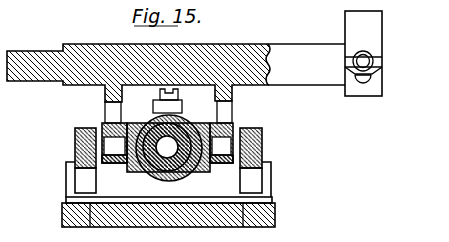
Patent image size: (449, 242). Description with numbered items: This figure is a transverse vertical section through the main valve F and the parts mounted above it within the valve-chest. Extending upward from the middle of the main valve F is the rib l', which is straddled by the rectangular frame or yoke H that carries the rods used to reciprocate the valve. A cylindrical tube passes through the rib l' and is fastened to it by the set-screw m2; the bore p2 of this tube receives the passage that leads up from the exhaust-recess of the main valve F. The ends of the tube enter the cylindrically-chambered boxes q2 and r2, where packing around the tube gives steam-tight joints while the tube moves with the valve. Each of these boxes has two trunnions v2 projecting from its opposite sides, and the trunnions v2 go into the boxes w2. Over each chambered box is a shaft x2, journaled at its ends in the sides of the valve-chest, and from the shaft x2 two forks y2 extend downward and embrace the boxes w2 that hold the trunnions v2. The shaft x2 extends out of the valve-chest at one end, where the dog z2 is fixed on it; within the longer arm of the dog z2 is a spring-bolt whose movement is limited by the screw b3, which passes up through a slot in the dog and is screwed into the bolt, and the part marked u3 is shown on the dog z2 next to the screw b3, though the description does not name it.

The shaft x2 is at (176, 73).
The dog z2 is at (363, 53).
The bolt u3 is at (383, 61).
The screw b3 is at (364, 89).
The set-screw m2 is at (176, 100).
The forks y2 is at (176, 108).
The boxes w2 is at (103, 126).
The trunnions v2 is at (104, 165).
The yoke H is at (170, 162).
The rib l' is at (162, 155).
The cylindrically-chambered box q2 is at (168, 158).
The bore p2 is at (167, 147).
The cylindrically-chambered box r2 is at (182, 169).
The main valve F is at (168, 212).